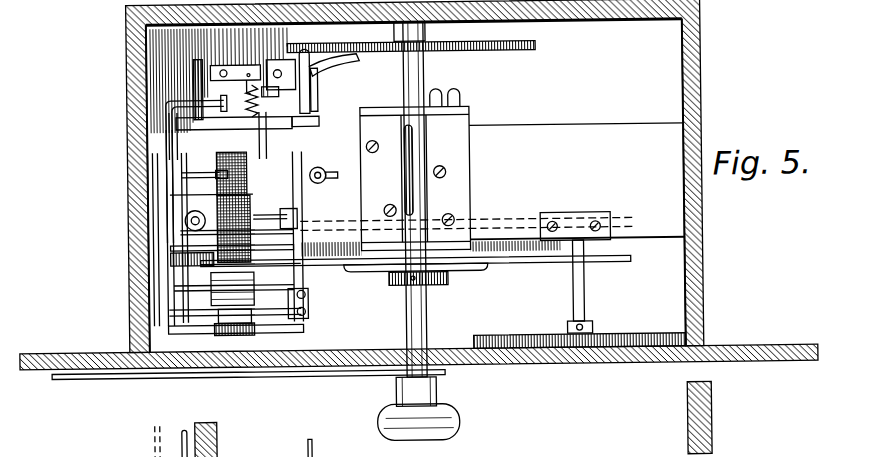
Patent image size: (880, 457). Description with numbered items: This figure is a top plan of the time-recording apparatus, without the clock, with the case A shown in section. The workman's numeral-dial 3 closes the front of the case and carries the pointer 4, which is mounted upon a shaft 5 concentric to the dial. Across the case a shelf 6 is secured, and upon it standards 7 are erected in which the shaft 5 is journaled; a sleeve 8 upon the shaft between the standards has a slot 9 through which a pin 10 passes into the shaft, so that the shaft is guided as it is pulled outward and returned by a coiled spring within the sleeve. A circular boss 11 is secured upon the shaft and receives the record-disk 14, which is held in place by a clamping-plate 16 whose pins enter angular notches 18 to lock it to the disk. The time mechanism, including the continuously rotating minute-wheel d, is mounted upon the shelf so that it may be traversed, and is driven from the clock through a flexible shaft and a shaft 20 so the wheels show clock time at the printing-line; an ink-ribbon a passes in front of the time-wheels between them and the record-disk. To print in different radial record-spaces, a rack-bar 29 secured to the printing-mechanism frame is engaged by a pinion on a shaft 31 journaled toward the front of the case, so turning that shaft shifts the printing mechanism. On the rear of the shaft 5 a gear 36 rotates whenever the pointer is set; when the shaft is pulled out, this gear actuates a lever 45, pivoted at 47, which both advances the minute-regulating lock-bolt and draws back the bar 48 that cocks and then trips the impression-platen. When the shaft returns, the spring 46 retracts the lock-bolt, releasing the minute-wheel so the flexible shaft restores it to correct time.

The workman's numeral-dial 3 is at (419, 371).
The pointer 4 is at (248, 388).
The shaft 5 is at (416, 231).
The shelf 6 is at (492, 190).
The standards 7 is at (447, 118).
The sleeve 8 is at (410, 183).
The slot 9 is at (428, 187).
The pin 10 is at (404, 180).
The circular boss 11 is at (448, 279).
The record-disk 14 is at (416, 272).
The clamping-plate 16 is at (375, 272).
The angular notches 18 is at (408, 285).
The shaft 20 is at (329, 165).
The rack-bar 29 is at (478, 227).
The shaft 31 is at (579, 294).
The gear 36 is at (415, 57).
The lever 45 is at (313, 81).
The spring 46 is at (268, 101).
The pivot 47 is at (236, 81).
The bar 48 is at (235, 69).
The case A is at (396, 176).
The ink-ribbon a is at (241, 271).
The minute-wheel d is at (244, 162).